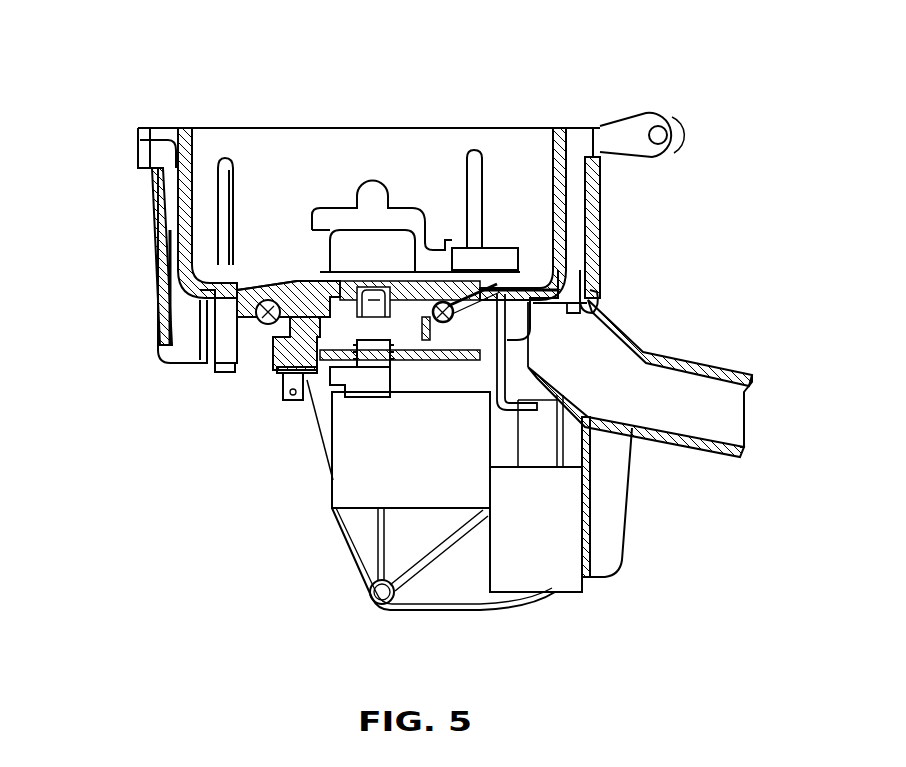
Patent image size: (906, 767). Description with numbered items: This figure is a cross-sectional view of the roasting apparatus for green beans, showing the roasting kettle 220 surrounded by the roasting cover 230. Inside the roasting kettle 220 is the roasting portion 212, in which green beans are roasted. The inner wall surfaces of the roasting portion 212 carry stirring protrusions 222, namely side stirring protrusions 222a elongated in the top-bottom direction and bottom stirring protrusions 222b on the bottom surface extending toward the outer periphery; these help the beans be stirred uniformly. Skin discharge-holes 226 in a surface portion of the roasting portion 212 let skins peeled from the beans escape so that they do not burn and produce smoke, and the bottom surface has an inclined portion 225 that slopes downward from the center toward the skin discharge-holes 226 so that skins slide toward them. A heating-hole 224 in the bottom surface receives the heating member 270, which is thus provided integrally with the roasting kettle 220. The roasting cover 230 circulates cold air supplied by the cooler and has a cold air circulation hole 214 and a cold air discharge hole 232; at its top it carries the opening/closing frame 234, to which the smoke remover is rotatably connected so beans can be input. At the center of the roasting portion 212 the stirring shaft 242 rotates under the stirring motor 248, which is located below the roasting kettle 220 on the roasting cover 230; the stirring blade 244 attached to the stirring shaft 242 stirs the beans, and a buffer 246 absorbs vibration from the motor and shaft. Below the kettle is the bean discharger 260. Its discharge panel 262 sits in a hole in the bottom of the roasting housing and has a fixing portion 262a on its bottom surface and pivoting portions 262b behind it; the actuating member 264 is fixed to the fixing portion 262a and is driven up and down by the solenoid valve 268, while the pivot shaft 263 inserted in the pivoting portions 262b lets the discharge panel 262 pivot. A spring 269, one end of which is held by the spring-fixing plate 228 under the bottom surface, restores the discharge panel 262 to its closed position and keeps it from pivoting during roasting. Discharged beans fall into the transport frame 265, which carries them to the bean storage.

The roasting portion 212 is at (515, 155).
The cold air circulation hole 214 is at (166, 172).
The roasting kettle 220 is at (203, 140).
The stirring protrusions 222 is at (280, 166).
The side stirring protrusions 222a is at (232, 178).
The bottom stirring protrusions 222b is at (263, 277).
The heating-hole 224 is at (237, 332).
The inclined portion 225 is at (290, 277).
The skin discharge-holes 226 is at (188, 300).
The spring-fixing plate 228 is at (337, 400).
The roasting cover 230 is at (152, 185).
The cold air discharge hole 232 is at (138, 150).
The opening/closing frame 234 is at (655, 120).
The stirring shaft 242 is at (372, 195).
The stirring blade 244 is at (504, 252).
The buffer 246 is at (345, 396).
The stirring motor 248 is at (346, 492).
The bean discharger 260 is at (692, 440).
The discharge panel 262 is at (590, 292).
The fixing portion 262a is at (525, 290).
The pivoting portions 262b is at (508, 368).
The pivot shaft 263 is at (436, 325).
The actuating member 264 is at (520, 362).
The transport frame 265 is at (720, 376).
The solenoid valve 268 is at (555, 535).
The spring 269 is at (540, 325).
The heating member 270 is at (258, 345).